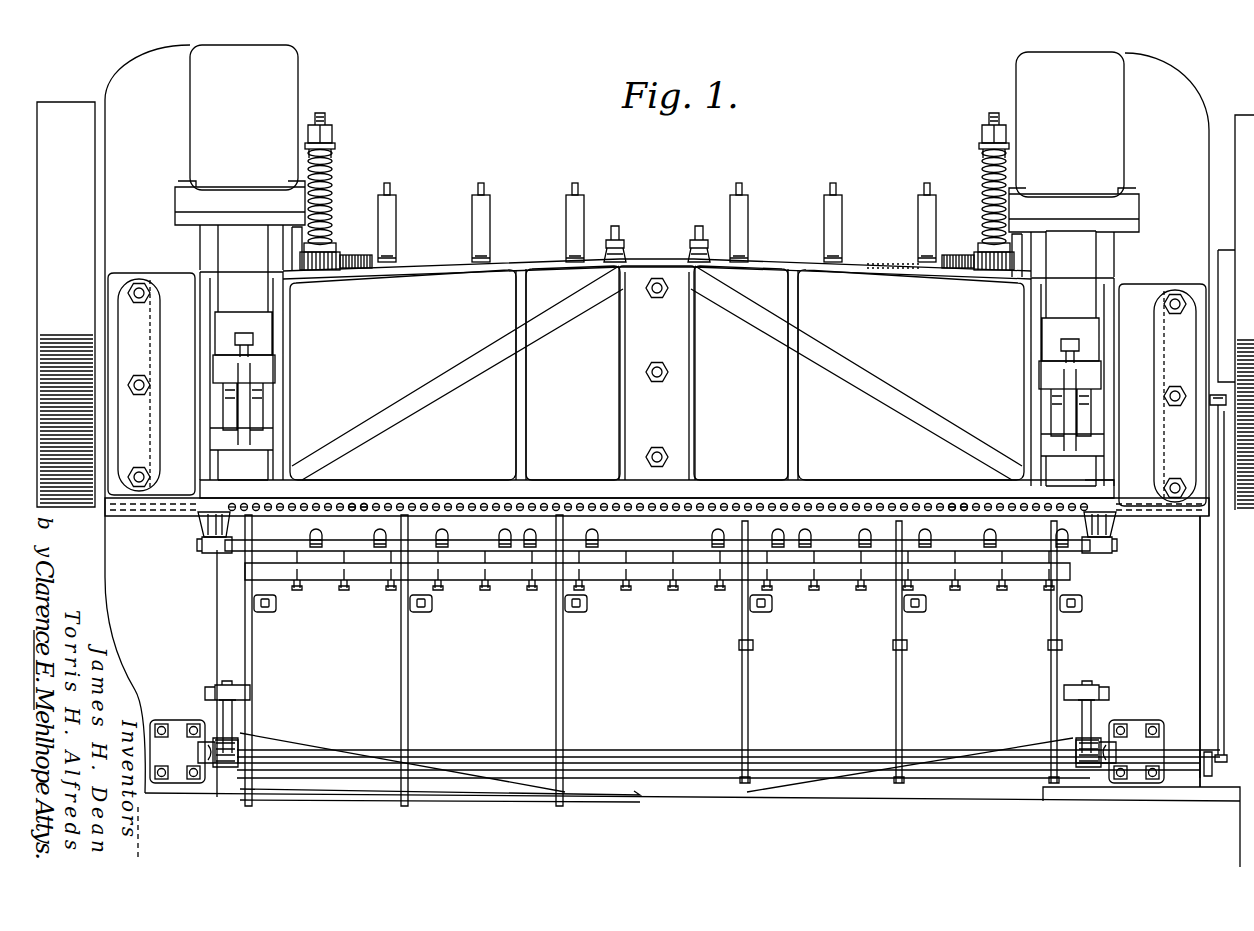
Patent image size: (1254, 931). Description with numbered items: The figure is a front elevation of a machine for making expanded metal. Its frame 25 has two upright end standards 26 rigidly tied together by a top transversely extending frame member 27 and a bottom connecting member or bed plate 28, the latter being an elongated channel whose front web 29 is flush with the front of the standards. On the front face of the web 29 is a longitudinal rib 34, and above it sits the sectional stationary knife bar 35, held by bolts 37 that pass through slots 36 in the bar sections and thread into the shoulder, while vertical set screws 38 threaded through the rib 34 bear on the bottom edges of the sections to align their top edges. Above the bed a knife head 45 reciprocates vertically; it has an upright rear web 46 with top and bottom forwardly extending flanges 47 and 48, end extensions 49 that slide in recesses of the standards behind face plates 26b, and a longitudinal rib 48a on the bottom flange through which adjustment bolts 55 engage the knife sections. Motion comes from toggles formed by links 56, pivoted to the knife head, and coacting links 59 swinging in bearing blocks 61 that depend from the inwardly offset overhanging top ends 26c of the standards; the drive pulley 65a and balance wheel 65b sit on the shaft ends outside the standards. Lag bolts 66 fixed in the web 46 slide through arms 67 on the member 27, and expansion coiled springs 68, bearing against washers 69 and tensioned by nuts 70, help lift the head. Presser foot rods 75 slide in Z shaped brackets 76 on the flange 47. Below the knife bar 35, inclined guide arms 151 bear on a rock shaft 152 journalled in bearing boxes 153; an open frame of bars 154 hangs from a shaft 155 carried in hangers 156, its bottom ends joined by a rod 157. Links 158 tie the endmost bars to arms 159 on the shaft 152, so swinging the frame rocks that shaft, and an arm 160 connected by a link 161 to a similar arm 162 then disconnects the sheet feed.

The frame 25 is at (664, 242).
The upright end standards 26 is at (118, 188).
The face plates 26b is at (657, 389).
The overhanging top ends of the end standards 26c is at (657, 121).
The top transversely extending frame member 27 is at (895, 250).
The bottom connecting frame member or bed plate 28 is at (272, 646).
The front web 29 is at (668, 635).
The longitudinally extending rib 34 is at (658, 575).
The stationary knife bar 35 is at (657, 534).
The slots 36 is at (478, 525).
The bolts 37 is at (590, 520).
The set screws 38 is at (388, 588).
The knife head 45 is at (418, 268).
The upright rear web 46 is at (657, 373).
The top forwardly extending flange 47 is at (470, 270).
The bottom forwardly extending flange 48 is at (442, 482).
The longitudinal rib 48a is at (884, 500).
The end extensions 49 is at (148, 407).
The adjustment bolts 55 is at (354, 500).
The links 56 is at (260, 400).
The coacting links 59 is at (657, 355).
The bearing blocks 61 is at (223, 200).
The drive pulley 65a is at (66, 304).
The balance wheel 65b is at (1195, 70).
The lag bolts 66 is at (333, 192).
The forwardly extending arms or straps 67 is at (348, 270).
The expansion coiled spring 68 is at (333, 170).
The washer 69 is at (336, 147).
The nuts 70 is at (327, 133).
The vertical rods or bolts 75 is at (478, 190).
The Z shaped brackets 76 is at (566, 220).
The guide arms 151 is at (749, 683).
The rock shaft 152 is at (946, 752).
The bearing boxes 153 is at (1168, 802).
The vertically disposed bars 154 is at (258, 621).
The transversely extending shaft 155 is at (225, 552).
The hangers 156 is at (198, 524).
The rod 157 is at (503, 806).
The links 158 is at (208, 690).
The arms 159 is at (238, 708).
The arm 160 is at (1210, 750).
The link 161 is at (1198, 602).
The arm 162 is at (1208, 403).